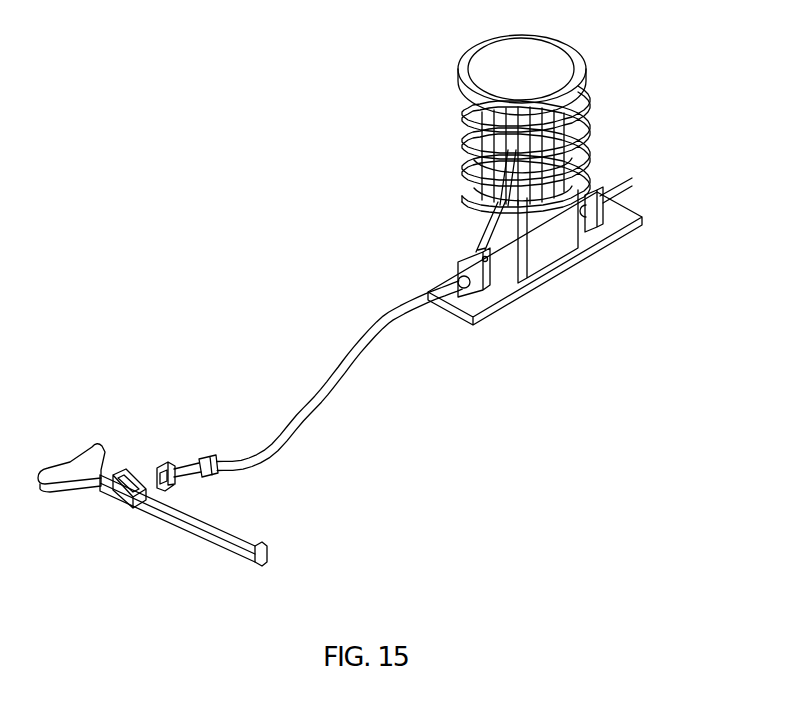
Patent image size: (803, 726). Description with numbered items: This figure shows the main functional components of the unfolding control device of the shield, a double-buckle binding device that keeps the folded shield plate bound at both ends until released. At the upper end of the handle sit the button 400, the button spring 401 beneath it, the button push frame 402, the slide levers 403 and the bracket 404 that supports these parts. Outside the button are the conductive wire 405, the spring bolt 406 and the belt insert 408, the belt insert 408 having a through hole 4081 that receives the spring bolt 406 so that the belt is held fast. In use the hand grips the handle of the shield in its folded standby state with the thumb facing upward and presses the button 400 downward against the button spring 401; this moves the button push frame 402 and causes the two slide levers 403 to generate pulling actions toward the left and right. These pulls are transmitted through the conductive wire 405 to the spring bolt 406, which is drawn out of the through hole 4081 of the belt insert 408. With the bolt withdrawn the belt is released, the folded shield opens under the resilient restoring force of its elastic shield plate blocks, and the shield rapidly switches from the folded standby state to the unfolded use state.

The button 400 is at (485, 72).
The button spring 401 is at (585, 103).
The button push frame 402 is at (500, 130).
The slide lever 403 is at (483, 226).
The bracket 404 is at (545, 245).
The conductive wire 405 is at (362, 350).
The spring bolt 406 is at (146, 492).
The belt insert 408 is at (78, 463).
The through hole 4081 is at (110, 492).